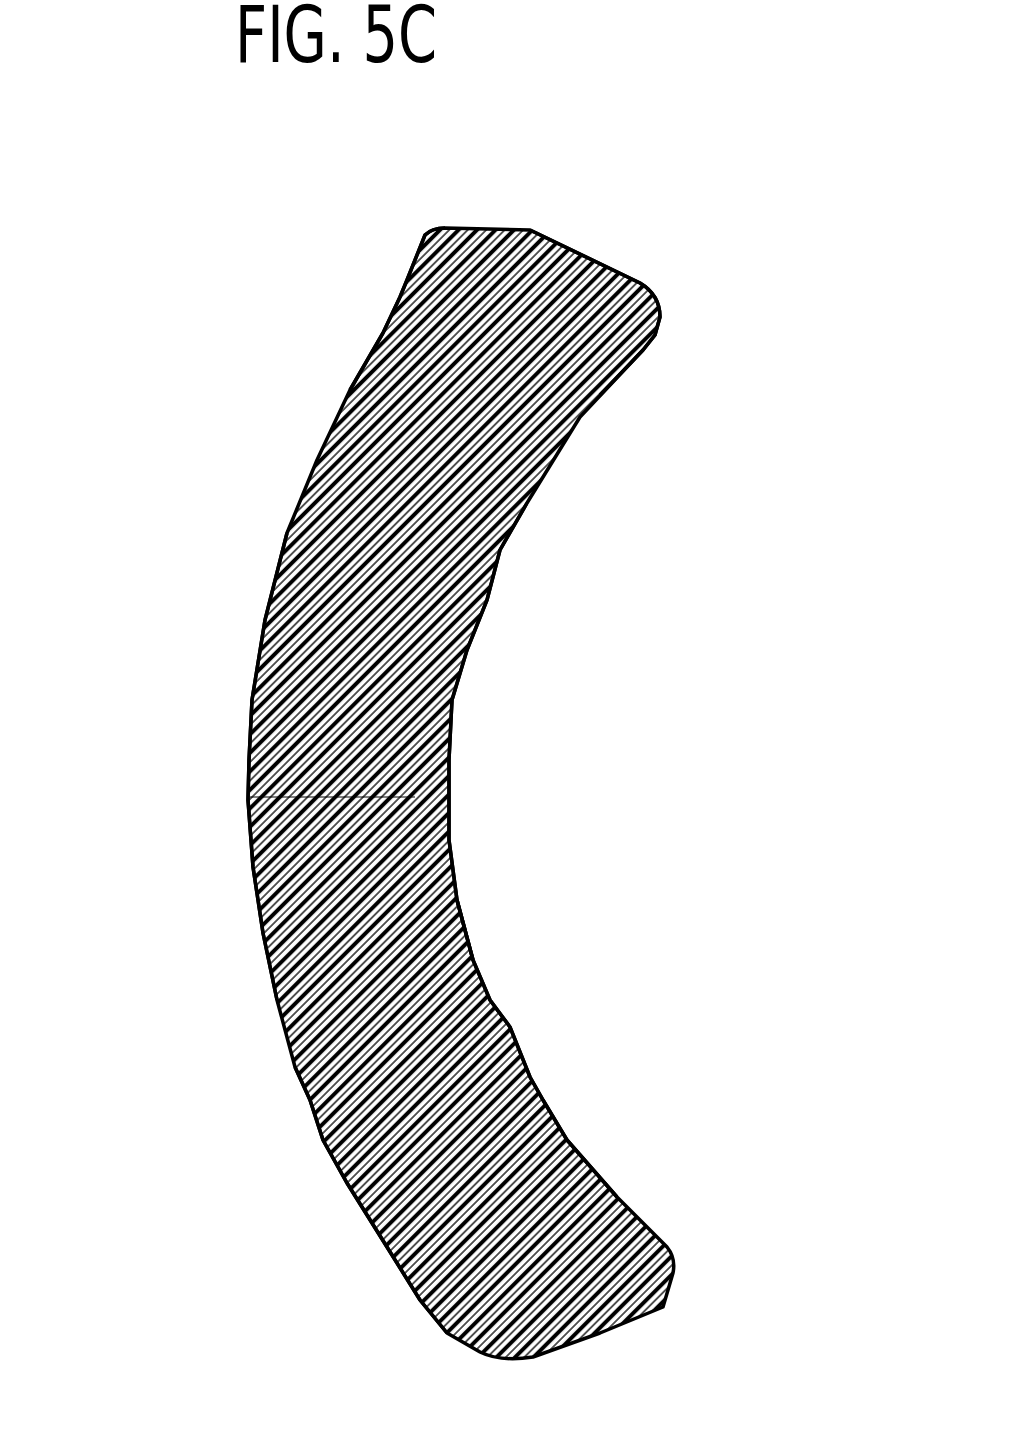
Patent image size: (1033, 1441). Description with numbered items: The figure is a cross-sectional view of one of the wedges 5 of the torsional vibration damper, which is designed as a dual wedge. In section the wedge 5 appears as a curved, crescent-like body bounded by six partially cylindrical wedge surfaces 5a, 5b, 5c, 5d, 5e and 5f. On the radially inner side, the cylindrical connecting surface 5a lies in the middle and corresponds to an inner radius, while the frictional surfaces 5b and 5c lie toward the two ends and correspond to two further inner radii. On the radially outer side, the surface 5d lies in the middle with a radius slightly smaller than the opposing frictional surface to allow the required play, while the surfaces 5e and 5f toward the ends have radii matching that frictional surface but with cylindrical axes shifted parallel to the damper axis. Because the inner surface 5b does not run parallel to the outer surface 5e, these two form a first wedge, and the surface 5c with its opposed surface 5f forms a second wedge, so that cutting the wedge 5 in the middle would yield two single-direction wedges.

The wedge 5 is at (735, 441).
The cylindrical connecting surface 5a is at (450, 752).
The frictional surface 5b is at (650, 348).
The frictional surface 5c is at (510, 1027).
The outer wedge surface 5d is at (250, 752).
The outer wedge surface 5e is at (407, 280).
The outer wedge surface 5f is at (347, 1183).